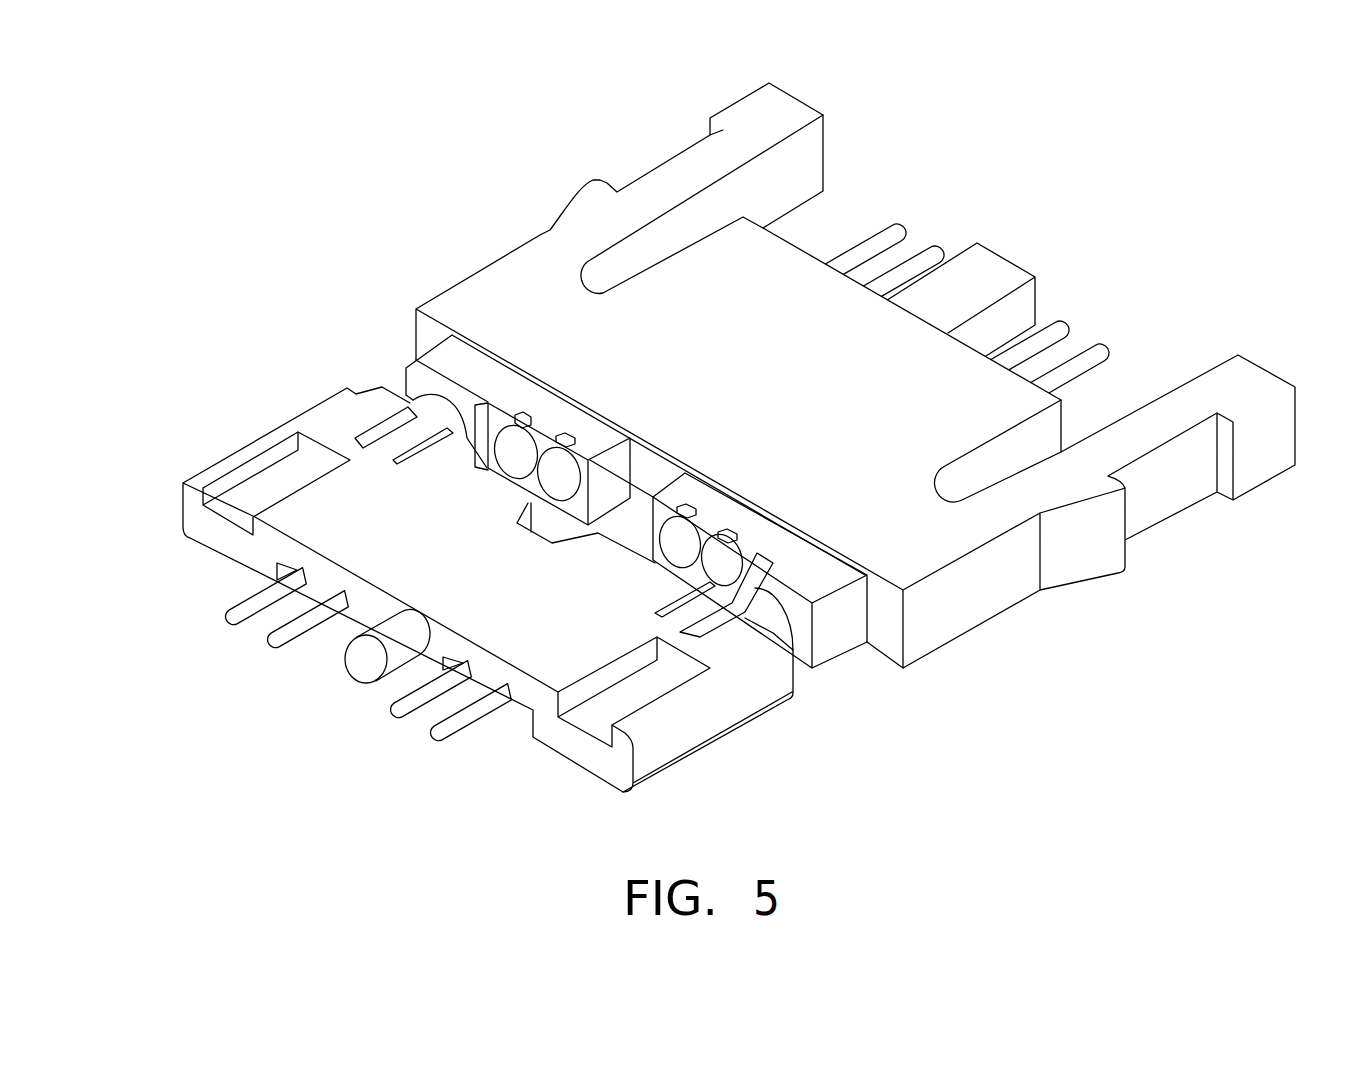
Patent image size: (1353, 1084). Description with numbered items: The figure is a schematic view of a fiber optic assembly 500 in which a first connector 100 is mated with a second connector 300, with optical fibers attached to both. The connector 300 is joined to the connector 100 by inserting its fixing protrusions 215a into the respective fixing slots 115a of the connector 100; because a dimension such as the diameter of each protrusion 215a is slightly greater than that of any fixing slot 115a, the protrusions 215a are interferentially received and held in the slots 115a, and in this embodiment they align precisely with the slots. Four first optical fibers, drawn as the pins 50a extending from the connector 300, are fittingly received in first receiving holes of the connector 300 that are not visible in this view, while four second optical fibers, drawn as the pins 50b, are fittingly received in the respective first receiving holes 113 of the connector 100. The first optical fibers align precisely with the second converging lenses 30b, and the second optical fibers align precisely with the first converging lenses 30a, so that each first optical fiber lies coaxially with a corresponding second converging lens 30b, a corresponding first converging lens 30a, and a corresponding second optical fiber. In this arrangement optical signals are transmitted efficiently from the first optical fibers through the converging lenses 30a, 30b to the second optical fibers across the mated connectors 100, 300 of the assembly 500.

The fiber optic assembly 500 is at (345, 170).
The connector 300 is at (508, 283).
The connector 100 is at (343, 420).
The upper pins 50a is at (875, 245).
The lower pins 50b is at (252, 613).
The first converging lens 30a is at (498, 483).
The second converging lens 30b is at (508, 437).
The first receiving hole 113 is at (288, 571).
The fixing slot 115a is at (717, 618).
The fixing protrusion 215a is at (762, 595).